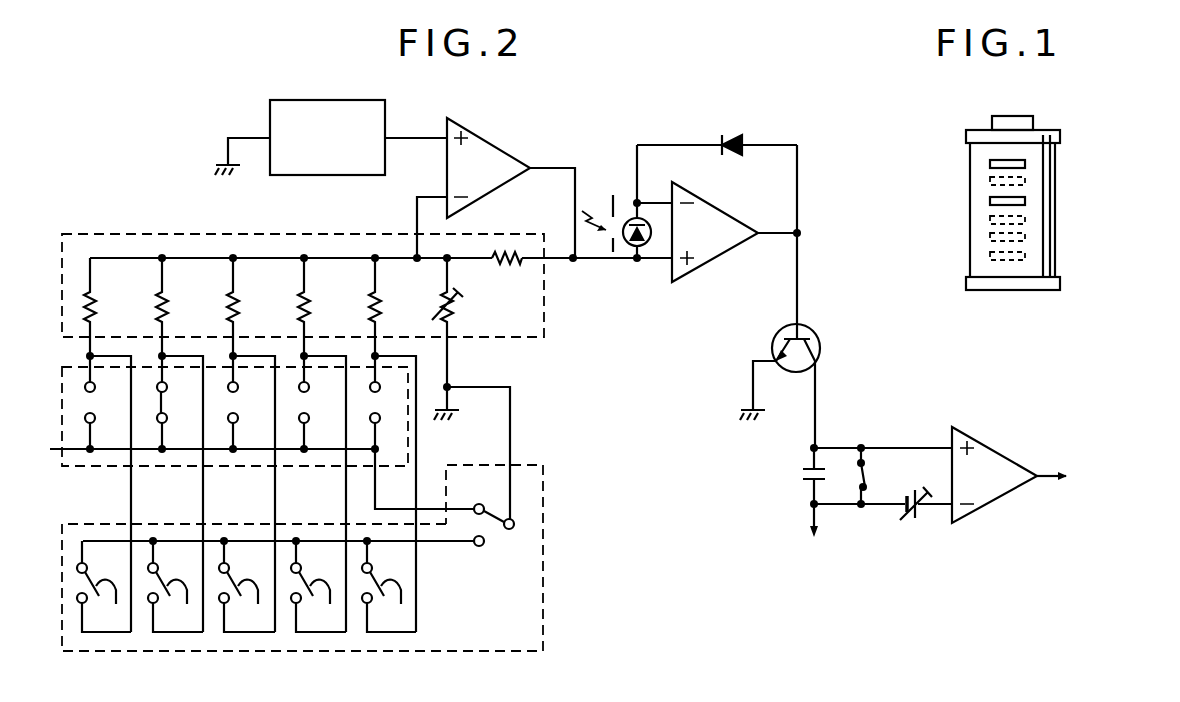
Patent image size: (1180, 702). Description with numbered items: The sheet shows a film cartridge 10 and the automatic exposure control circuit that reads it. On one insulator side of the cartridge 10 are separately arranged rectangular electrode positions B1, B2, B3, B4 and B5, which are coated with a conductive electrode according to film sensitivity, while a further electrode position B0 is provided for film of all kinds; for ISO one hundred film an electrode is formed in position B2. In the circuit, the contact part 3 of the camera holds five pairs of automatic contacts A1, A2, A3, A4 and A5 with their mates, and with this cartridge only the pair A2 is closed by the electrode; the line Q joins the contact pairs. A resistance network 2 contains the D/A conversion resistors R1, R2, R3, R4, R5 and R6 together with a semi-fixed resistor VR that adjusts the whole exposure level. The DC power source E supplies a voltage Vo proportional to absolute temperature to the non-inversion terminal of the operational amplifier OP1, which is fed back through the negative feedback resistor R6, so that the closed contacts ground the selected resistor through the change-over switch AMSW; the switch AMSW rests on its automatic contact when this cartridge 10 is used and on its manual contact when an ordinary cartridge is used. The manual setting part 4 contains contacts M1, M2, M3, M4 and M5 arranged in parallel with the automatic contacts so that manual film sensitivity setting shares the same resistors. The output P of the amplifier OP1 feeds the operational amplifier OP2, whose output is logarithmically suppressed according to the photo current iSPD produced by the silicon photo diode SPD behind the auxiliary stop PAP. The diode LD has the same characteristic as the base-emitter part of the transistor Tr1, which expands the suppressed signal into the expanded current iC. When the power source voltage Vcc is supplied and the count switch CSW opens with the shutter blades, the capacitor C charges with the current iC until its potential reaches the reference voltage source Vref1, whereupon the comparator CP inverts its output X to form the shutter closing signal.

In FIG. 2, the resistance network 2 is at (103, 233).
In FIG. 2, the contact part 3 is at (60, 382).
In FIG. 2, the film sensitivity manual setting part 4 is at (103, 523).
In FIG. 1, the film cartridge 10 is at (1068, 202).
In FIG. 1, the electrode position B0 is at (990, 163).
In FIG. 1, the electrode position B1 is at (1025, 181).
In FIG. 2, the electrode position B2 is at (157, 405).
In FIG. 1, the electrode position B2 is at (990, 200).
In FIG. 1, the electrode position B3 is at (1025, 220).
In FIG. 1, the electrode position B4 is at (990, 237).
In FIG. 1, the electrode position B5 is at (995, 262).
In FIG. 2, the DC power source E is at (270, 118).
In FIG. 2, the voltage proportional to absolute temperature Vo is at (416, 125).
In FIG. 2, the operational amplifier OP1 is at (496, 188).
In FIG. 2, the operational amplifier OP2 is at (736, 234).
In FIG. 2, the resistor R1 is at (96, 304).
In FIG. 2, the resistor R2 is at (168, 304).
In FIG. 2, the resistor R3 is at (239, 304).
In FIG. 2, the resistor R4 is at (310, 304).
In FIG. 2, the resistor R5 is at (381, 304).
In FIG. 2, the negative feedback resistor R6 is at (512, 266).
In FIG. 2, the semi-fixed resistor VR is at (456, 312).
In FIG. 2, the output of operational amplifier OP1 P is at (575, 262).
In FIG. 2, the line Q is at (54, 447).
In FIG. 2, the contact A1 is at (108, 494).
In FIG. 2, the contact A2 is at (180, 494).
In FIG. 2, the contact A3 is at (251, 494).
In FIG. 2, the contact A4 is at (322, 494).
In FIG. 2, the contact A5 is at (422, 494).
In FIG. 2, the contact M1 is at (105, 594).
In FIG. 2, the contact M2 is at (176, 586).
In FIG. 2, the contact M3 is at (247, 586).
In FIG. 2, the contact M4 is at (319, 586).
In FIG. 2, the contact M5 is at (390, 586).
In FIG. 2, the change-over switch AMSW is at (508, 586).
In FIG. 2, the auxiliary stop PAP is at (610, 198).
In FIG. 2, the silicon photo diode SPD is at (637, 216).
In FIG. 2, the photo current iSPD is at (648, 190).
In FIG. 2, the diode LD is at (730, 134).
In FIG. 2, the transistor Tr1 is at (782, 336).
In FIG. 2, the expanded current iC is at (835, 395).
In FIG. 2, the capacitor C is at (803, 474).
In FIG. 2, the power source voltage Vcc is at (817, 553).
In FIG. 2, the count switch CSW is at (868, 478).
In FIG. 2, the reference voltage source Vref1 is at (913, 521).
In FIG. 2, the comparator CP is at (1009, 475).
In FIG. 2, the output X is at (1085, 477).